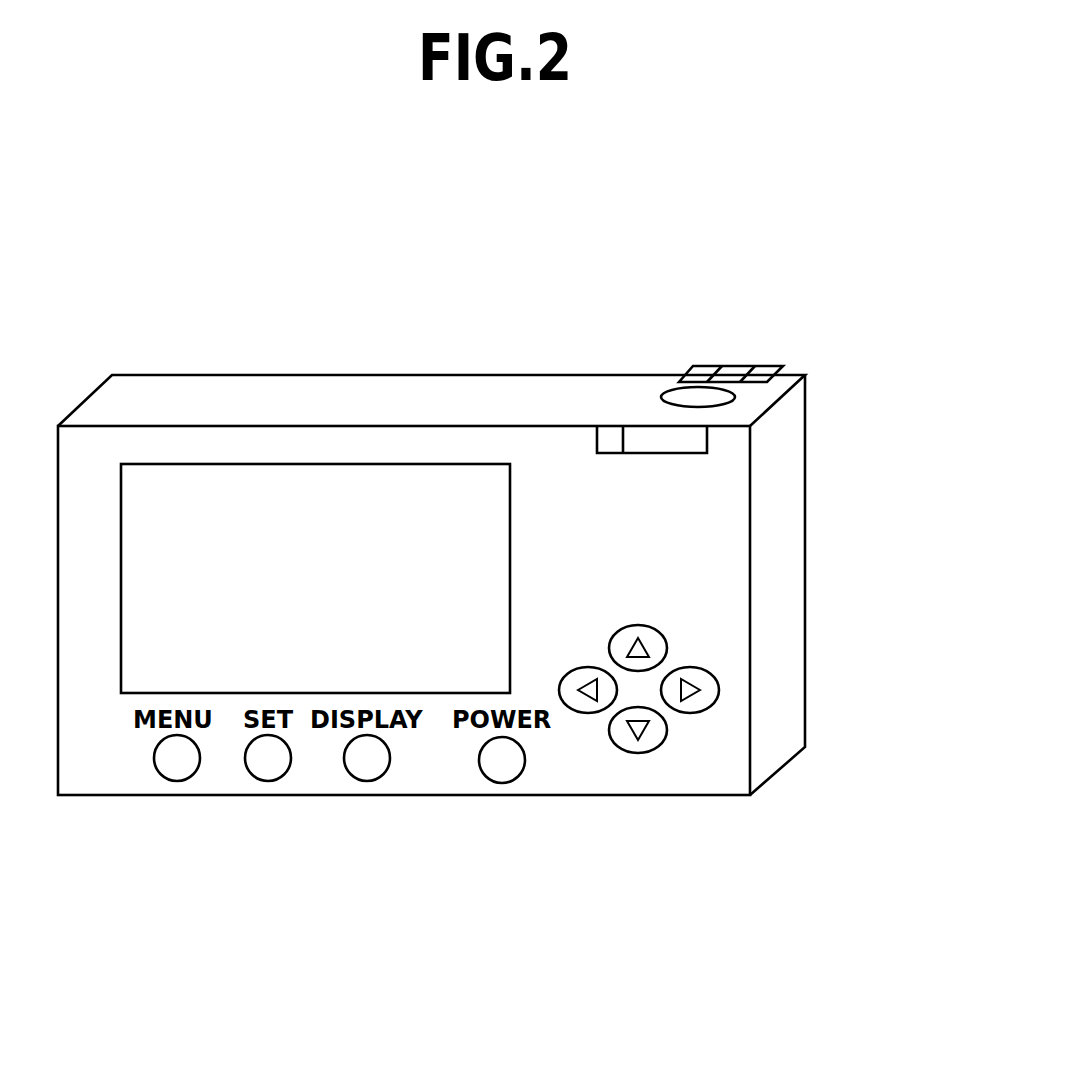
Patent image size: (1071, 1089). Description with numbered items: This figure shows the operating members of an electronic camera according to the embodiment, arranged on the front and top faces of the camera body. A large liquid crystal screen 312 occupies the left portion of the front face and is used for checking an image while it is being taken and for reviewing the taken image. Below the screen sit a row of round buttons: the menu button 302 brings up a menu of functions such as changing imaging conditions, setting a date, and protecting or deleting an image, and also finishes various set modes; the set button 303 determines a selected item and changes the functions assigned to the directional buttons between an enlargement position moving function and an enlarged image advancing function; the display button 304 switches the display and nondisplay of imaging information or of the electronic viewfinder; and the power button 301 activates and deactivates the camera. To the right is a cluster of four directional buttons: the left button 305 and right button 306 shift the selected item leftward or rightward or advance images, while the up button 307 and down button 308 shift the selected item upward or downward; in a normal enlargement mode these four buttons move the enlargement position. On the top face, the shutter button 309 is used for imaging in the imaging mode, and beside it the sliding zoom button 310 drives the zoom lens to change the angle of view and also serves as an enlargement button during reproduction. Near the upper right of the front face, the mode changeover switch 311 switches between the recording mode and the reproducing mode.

The power button 301 is at (497, 783).
The menu button 302 is at (170, 781).
The set button 303 is at (262, 781).
The display button 304 is at (362, 781).
The left button 305 is at (582, 713).
The right button 306 is at (713, 713).
The up button 307 is at (652, 625).
The down button 308 is at (642, 753).
The shutter button 309 is at (683, 398).
The zoom button 310 is at (735, 367).
The mode changeover switch 311 is at (688, 444).
The liquid crystal screen 312 is at (318, 462).